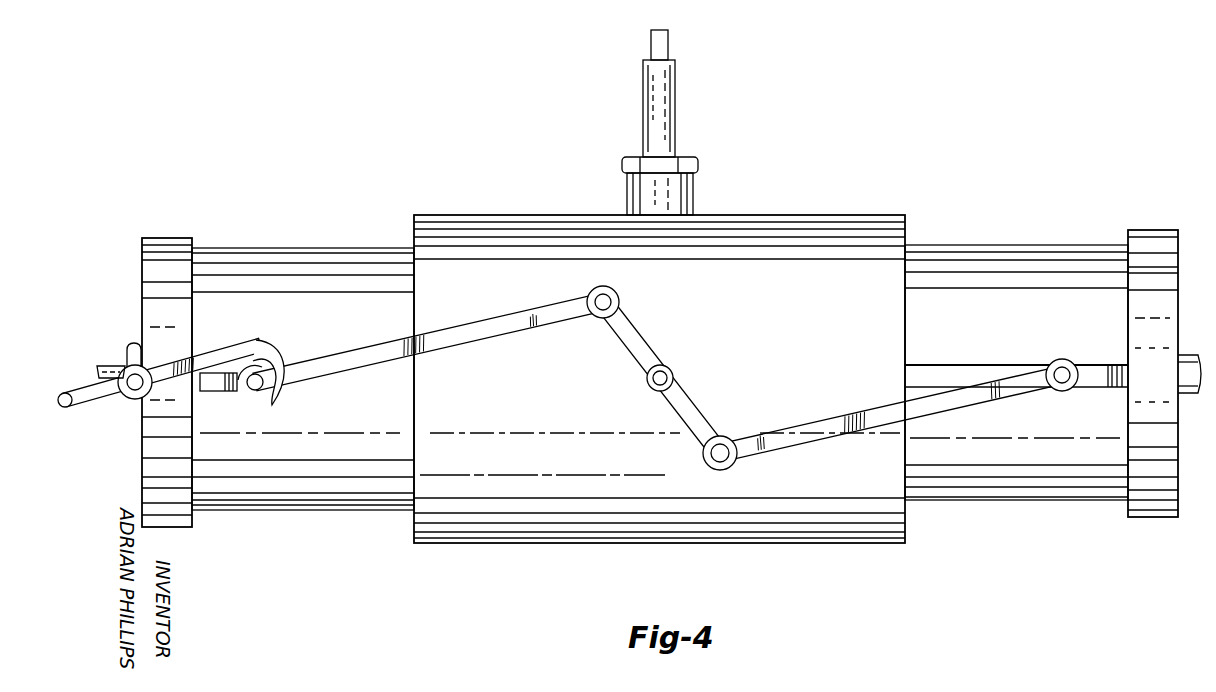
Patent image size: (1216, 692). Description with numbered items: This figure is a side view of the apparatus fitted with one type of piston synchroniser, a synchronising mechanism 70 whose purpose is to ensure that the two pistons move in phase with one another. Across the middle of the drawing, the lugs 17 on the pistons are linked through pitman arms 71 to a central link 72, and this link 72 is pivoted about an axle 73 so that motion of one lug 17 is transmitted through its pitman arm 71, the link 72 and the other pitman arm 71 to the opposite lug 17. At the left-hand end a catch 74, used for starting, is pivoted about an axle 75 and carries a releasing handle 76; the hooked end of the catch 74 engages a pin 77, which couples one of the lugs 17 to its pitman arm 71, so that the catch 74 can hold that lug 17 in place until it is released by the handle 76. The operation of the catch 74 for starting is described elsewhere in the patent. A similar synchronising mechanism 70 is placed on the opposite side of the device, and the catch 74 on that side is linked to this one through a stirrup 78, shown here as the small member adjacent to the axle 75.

The pin 17 is at (214, 391).
The linkage 70 is at (704, 402).
The link 71 is at (534, 312).
The connecting link 72 is at (672, 402).
The pivot pin 73 is at (652, 378).
The hook 74 is at (270, 343).
The pivot 75 is at (133, 392).
The handle lever 76 is at (66, 406).
The pin 77 is at (254, 391).
The stop 78 is at (135, 345).